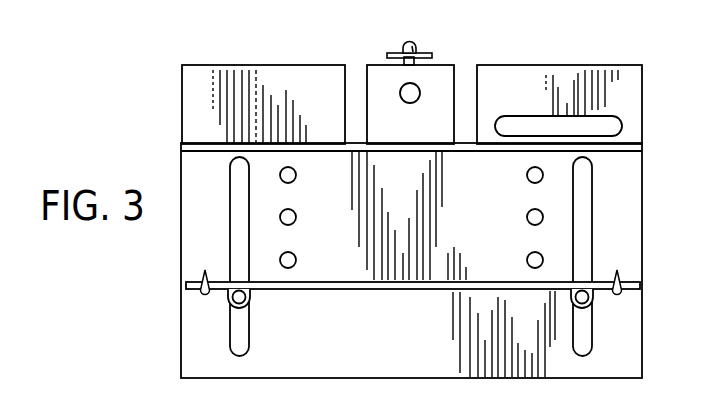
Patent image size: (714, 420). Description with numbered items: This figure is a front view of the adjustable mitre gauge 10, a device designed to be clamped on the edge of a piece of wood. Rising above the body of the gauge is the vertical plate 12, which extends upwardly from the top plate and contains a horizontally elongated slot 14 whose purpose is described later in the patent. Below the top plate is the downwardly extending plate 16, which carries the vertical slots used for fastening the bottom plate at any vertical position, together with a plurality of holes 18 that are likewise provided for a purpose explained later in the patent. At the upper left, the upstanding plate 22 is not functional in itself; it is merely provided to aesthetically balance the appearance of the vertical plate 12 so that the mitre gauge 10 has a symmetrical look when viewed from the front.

The adjustable mitre gauge 10 is at (148, 113).
The vertical plate 12 is at (515, 85).
The horizontally elongated slot 14 is at (620, 134).
The downwardly extending plate 16 is at (200, 223).
The holes 18 is at (298, 180).
The upstanding plate 22 is at (203, 88).